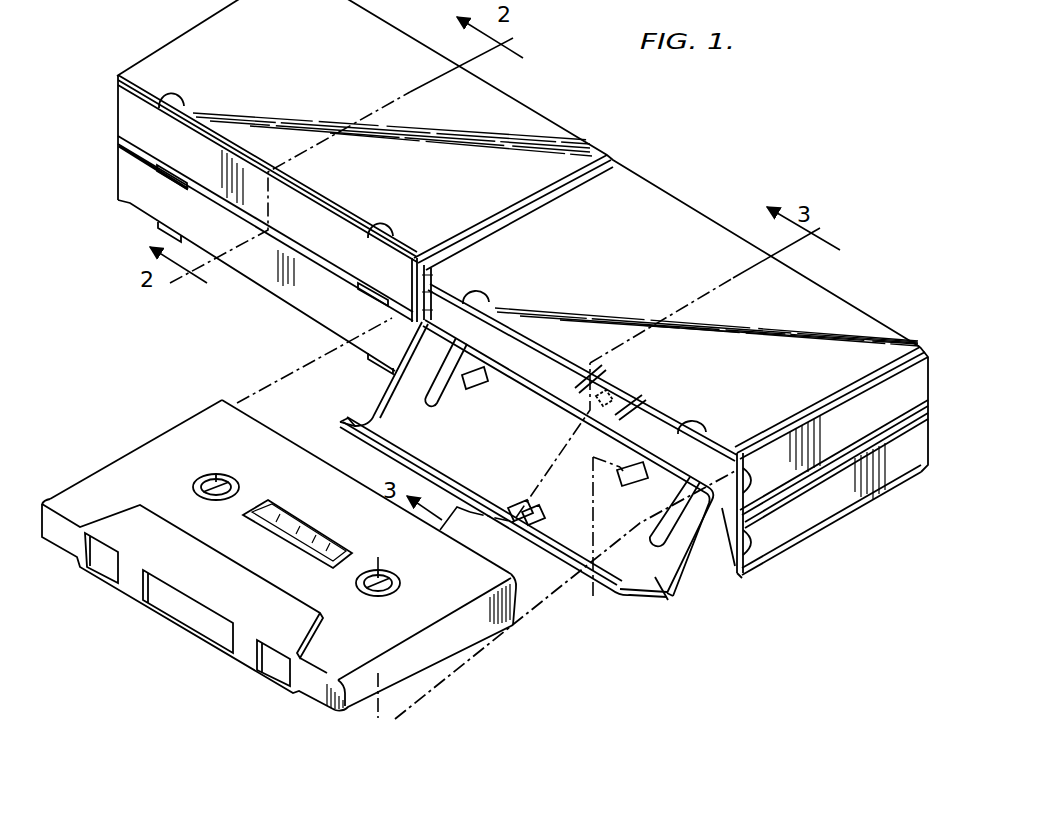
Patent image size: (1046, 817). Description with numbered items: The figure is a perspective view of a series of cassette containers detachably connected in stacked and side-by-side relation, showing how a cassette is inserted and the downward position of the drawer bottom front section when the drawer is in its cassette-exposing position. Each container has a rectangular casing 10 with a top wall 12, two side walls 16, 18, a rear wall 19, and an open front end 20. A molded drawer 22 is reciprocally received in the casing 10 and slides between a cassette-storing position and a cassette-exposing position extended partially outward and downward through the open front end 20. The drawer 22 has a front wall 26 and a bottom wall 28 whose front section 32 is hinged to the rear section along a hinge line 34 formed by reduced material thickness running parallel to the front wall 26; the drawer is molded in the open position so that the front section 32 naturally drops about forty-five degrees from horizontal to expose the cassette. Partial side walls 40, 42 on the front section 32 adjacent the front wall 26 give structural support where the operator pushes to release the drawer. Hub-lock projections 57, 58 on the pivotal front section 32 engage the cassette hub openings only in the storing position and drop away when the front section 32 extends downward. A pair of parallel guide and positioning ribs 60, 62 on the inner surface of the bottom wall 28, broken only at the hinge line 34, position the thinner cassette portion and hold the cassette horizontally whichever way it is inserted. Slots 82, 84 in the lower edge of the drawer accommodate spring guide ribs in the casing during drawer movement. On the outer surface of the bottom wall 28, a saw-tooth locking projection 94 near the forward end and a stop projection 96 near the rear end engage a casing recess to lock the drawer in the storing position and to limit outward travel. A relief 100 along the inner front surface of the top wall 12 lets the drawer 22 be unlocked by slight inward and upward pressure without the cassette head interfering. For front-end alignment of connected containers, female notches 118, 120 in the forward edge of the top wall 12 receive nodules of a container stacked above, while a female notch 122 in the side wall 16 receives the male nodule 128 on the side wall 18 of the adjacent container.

The casing 10 is at (857, 302).
The top wall 12 is at (684, 235).
The side wall 16 is at (824, 432).
The side wall 18 is at (583, 175).
The rear wall 19 is at (890, 332).
The open front end 20 is at (667, 437).
The drawer 22 is at (689, 583).
The front wall 26 is at (607, 600).
The bottom wall 28 is at (408, 405).
The front section 32 is at (652, 582).
The hinge line 34 is at (542, 384).
The partial side wall 40 is at (649, 605).
The partial side wall 42 is at (338, 424).
The hub-lock projection 57 is at (642, 470).
The hub-lock projection 58 is at (471, 387).
The guide and positioning rib 60 is at (657, 550).
The guide and positioning rib 62 is at (431, 402).
The slot 82 is at (619, 416).
The slot 84 is at (578, 384).
The locking projection 94 is at (537, 514).
The stop projection 96 is at (614, 394).
The relief 100 is at (487, 312).
The female notch 118 is at (704, 424).
The female notch 120 is at (481, 294).
The female notch 122 is at (750, 470).
The male nodule 128 is at (435, 298).